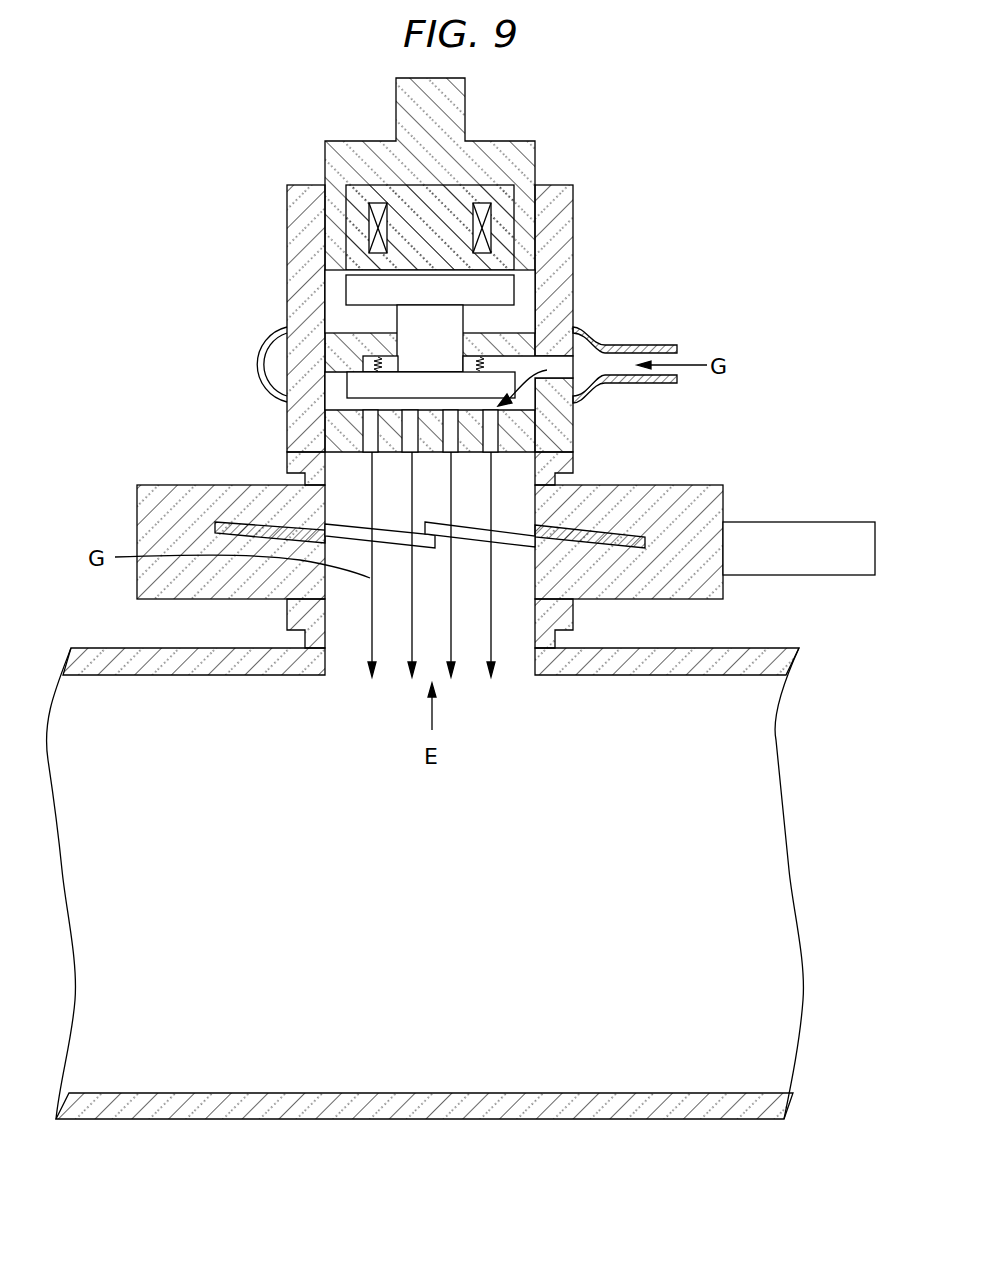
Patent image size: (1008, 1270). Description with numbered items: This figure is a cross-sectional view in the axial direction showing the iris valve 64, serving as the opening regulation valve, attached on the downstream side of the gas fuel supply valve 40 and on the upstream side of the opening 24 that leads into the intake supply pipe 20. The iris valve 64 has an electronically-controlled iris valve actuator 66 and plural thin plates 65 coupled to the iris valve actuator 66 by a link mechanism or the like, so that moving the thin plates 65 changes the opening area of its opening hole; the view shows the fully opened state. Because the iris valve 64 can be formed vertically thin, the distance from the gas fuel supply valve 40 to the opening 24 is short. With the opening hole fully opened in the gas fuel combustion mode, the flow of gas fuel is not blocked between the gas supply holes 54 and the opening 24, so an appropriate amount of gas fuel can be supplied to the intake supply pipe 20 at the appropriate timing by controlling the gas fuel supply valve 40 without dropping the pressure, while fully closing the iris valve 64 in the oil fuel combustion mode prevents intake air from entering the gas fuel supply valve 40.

The intake supply pipe 20 is at (730, 680).
The opening 24 is at (512, 665).
The gas fuel supply valve 40 is at (556, 118).
The gas supply holes 54 is at (364, 464).
The iris valve 64 is at (733, 466).
The thin plates 65 is at (215, 528).
The iris valve actuator 66 is at (808, 536).